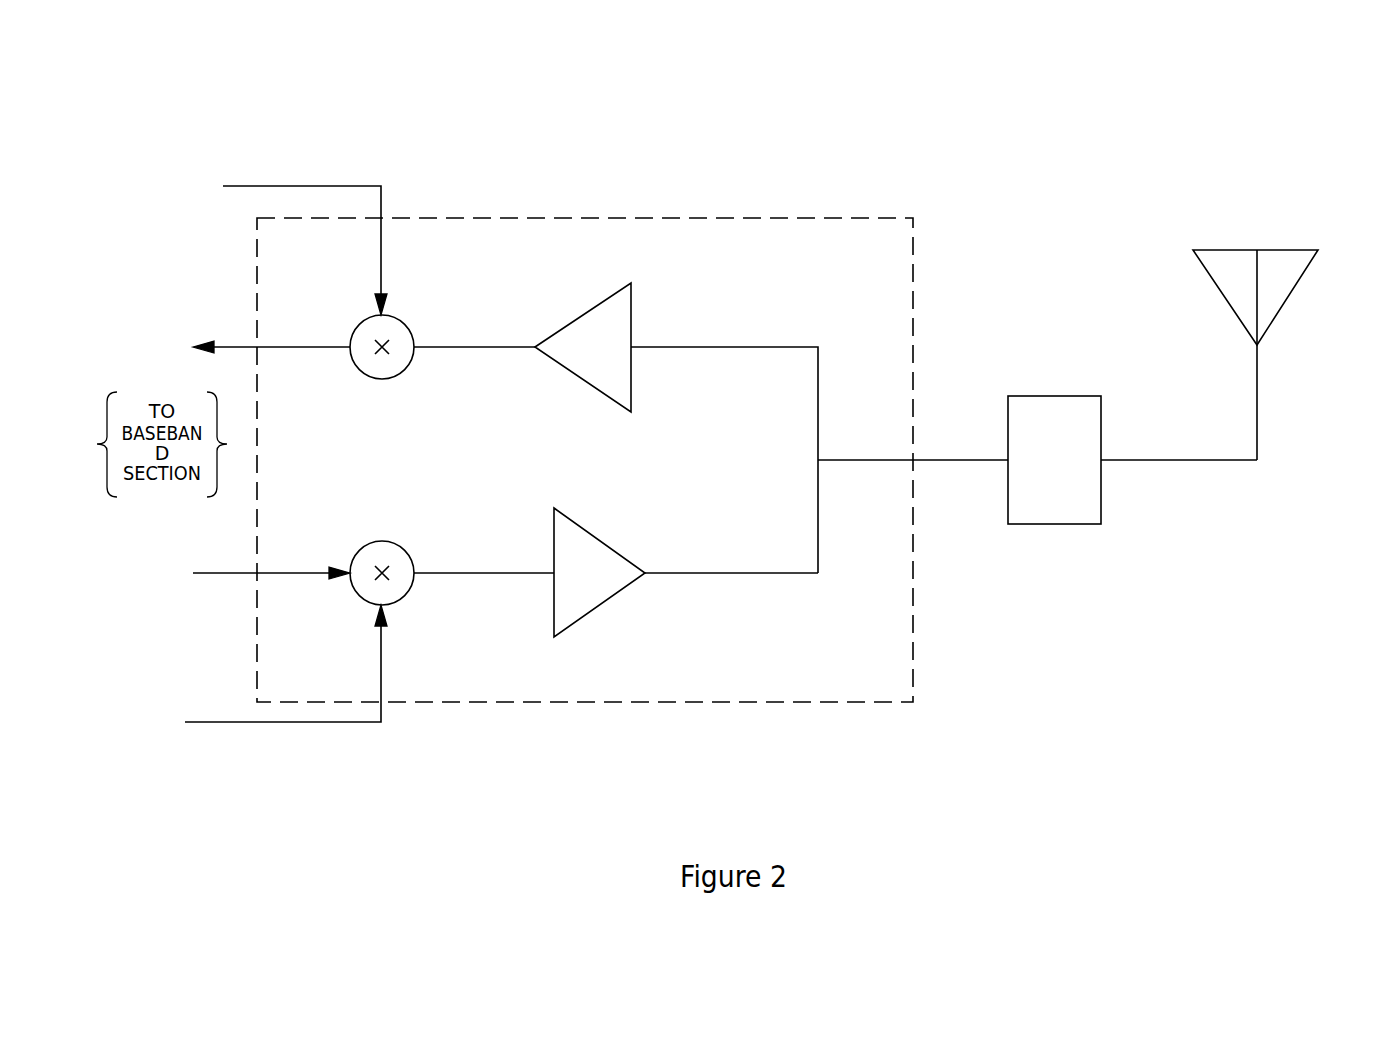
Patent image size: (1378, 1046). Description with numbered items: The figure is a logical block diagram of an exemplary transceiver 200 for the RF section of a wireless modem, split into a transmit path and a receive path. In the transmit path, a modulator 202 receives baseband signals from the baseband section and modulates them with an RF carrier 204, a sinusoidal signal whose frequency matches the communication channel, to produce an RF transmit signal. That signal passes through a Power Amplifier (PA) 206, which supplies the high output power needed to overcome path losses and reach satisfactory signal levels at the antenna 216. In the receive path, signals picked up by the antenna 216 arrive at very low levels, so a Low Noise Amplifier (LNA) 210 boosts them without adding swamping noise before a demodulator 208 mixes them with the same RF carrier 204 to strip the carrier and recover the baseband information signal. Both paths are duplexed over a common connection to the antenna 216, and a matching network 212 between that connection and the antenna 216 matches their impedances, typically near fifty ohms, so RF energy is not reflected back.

The transceiver 200 is at (765, 118).
The modulator 202 is at (407, 597).
The RF carrier 204 is at (251, 458).
The Power Amplifier (PA) 206 is at (583, 522).
The demodulator 208 is at (403, 371).
The Low Noise Amplifier (LNA) 210 is at (600, 298).
The matching network 212 is at (1110, 506).
The antenna 216 is at (1263, 354).